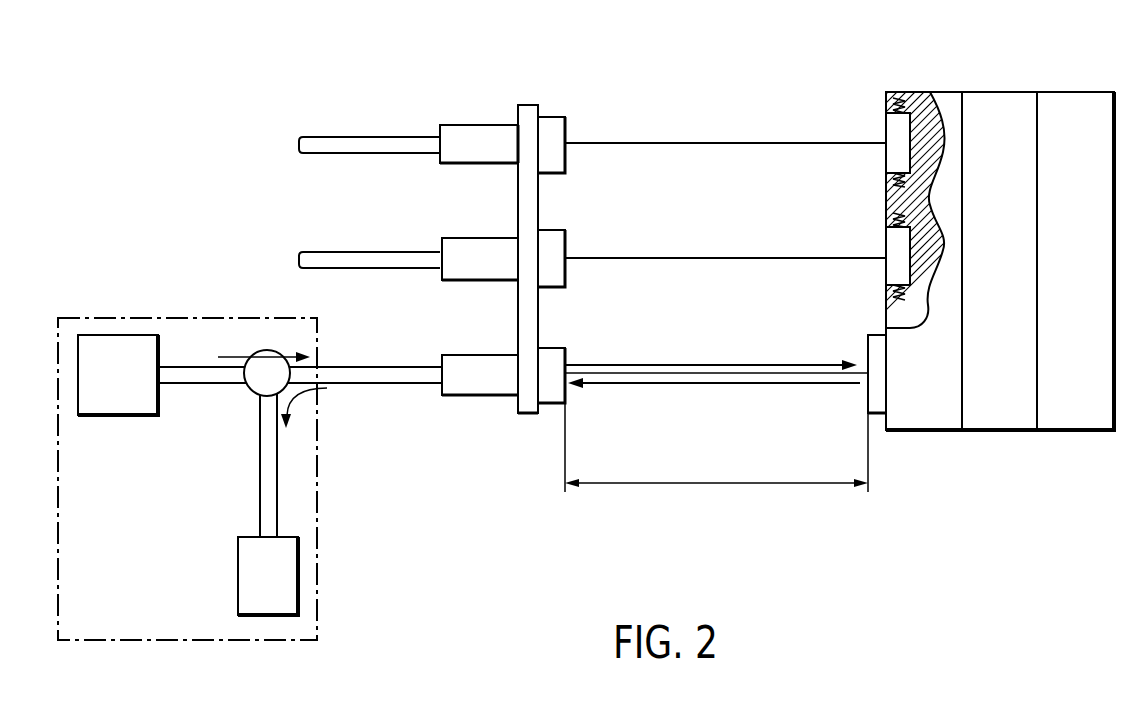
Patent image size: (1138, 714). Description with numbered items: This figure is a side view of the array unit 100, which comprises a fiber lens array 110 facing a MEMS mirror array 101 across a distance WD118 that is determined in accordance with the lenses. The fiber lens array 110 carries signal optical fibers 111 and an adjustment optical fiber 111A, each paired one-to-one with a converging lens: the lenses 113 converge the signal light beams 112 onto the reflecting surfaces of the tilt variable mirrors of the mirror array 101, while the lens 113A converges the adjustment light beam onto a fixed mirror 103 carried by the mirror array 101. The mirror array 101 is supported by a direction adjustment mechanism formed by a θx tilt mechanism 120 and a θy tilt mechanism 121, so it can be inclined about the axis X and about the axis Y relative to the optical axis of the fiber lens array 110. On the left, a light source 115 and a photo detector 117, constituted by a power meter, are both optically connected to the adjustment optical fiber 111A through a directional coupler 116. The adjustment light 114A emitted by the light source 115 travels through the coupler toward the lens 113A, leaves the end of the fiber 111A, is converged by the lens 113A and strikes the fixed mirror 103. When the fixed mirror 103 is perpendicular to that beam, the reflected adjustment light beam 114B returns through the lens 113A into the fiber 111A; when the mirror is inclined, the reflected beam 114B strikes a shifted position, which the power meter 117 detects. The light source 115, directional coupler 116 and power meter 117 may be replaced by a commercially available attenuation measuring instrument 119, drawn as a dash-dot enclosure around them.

The array unit 100 is at (183, 70).
The mirror array 101 is at (947, 104).
The fixed mirror 103 is at (870, 338).
The fiber lens array 110 is at (528, 110).
The signal optical fibers 111 is at (368, 136).
The adjustment optical fiber 111A is at (412, 383).
The signal light beams 112 is at (702, 140).
The lenses 113 is at (553, 125).
The lens 113A is at (552, 395).
The adjustment light beam 114A is at (732, 362).
The reflected adjustment light beam 114B is at (730, 385).
The light source 115 is at (113, 350).
The directional coupler 116 is at (265, 350).
The photo detector 117 is at (272, 605).
The attenuation measuring instrument 119 is at (317, 500).
The θx tilt mechanism 120 is at (1078, 420).
The θy tilt mechanism 121 is at (1008, 420).
The distance WD WD118 is at (716, 447).